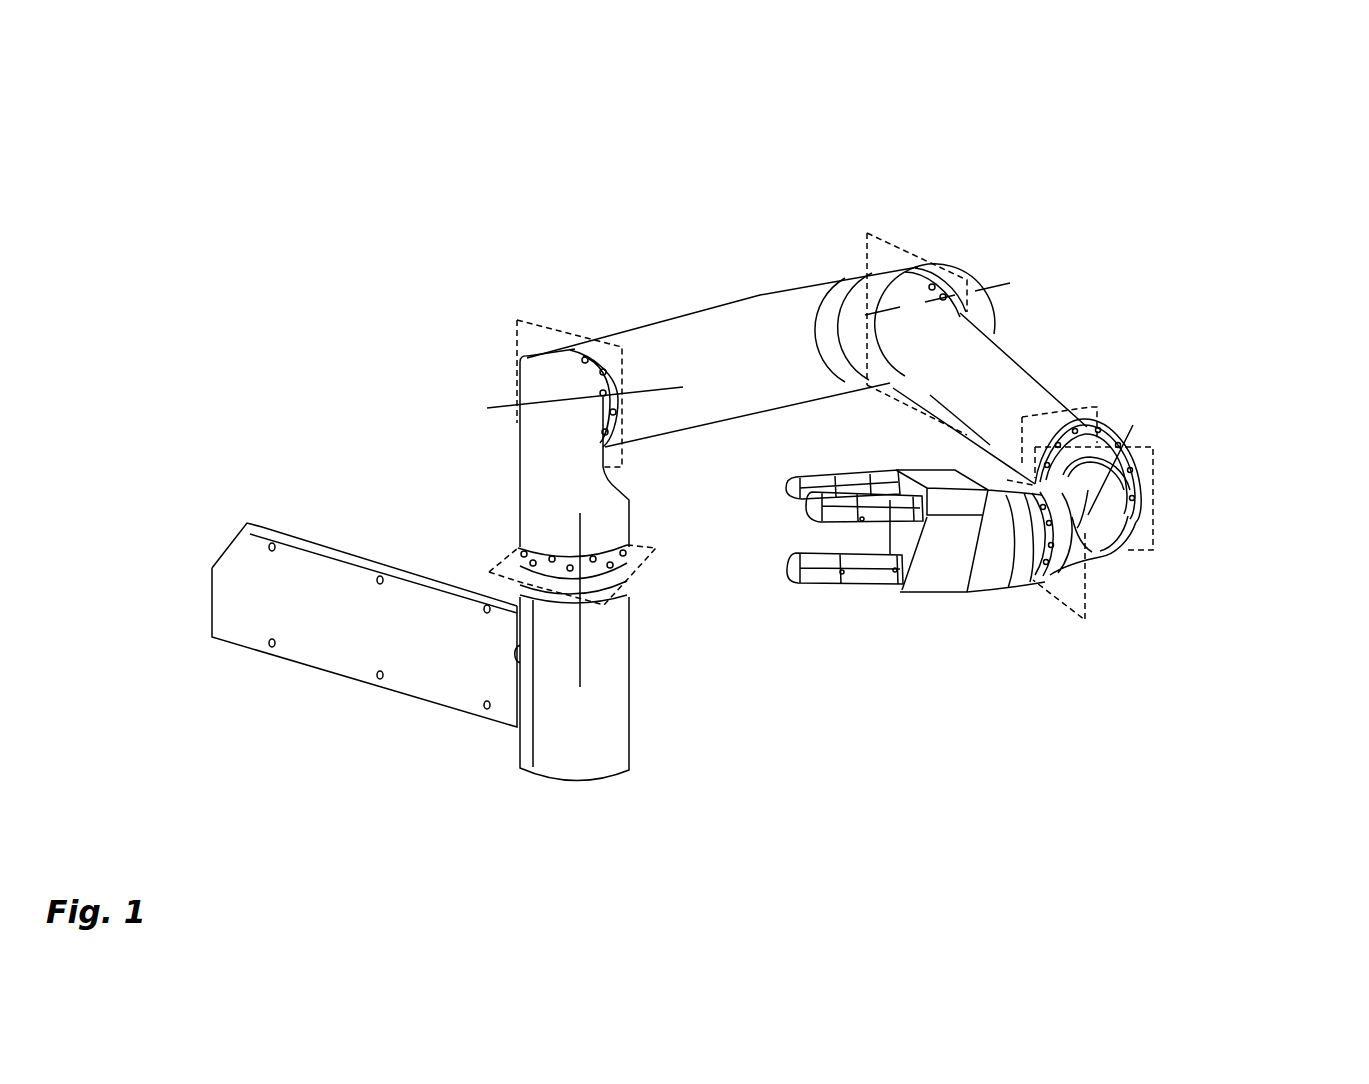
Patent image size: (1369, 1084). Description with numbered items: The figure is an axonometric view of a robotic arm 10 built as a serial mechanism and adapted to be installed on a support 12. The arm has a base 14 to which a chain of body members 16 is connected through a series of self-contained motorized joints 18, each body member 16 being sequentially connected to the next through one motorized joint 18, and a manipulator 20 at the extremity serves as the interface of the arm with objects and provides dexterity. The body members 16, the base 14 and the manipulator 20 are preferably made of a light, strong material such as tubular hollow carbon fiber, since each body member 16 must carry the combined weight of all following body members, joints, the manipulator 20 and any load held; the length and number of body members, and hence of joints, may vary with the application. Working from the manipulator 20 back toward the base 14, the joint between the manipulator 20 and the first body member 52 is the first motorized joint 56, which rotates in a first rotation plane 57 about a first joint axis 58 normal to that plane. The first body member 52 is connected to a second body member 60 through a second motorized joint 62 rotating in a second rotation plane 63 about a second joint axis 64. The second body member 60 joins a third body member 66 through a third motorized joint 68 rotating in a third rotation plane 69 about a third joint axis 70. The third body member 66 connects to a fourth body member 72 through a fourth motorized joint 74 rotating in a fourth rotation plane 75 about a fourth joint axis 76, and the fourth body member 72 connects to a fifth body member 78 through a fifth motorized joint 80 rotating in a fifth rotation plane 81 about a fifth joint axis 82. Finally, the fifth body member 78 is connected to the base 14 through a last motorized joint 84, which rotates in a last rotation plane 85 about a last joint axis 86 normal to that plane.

The robotic arm 10 is at (838, 143).
The support 12 is at (247, 617).
The base 14 is at (584, 759).
The body members 16 is at (650, 338).
The self-contained motorized joints 18 is at (852, 435).
The manipulator 20 is at (937, 562).
The first body member 52 is at (1100, 557).
The first motorized joint 56 is at (1033, 577).
The first rotation plane 57 is at (1085, 622).
The first joint axis 58 is at (1028, 532).
The second body member 60 is at (1105, 445).
The second motorized joint 62 is at (1153, 510).
The second rotation plane 63 is at (1155, 510).
The second joint axis 64 is at (1108, 448).
The third body member 66 is at (1017, 372).
The third motorized joint 68 is at (1107, 447).
The third rotation plane 69 is at (1123, 402).
The third joint axis 70 is at (1010, 407).
The fourth body member 72 is at (735, 322).
The fourth motorized joint 74 is at (945, 272).
The fourth rotation plane 75 is at (867, 233).
The fourth joint axis 76 is at (989, 286).
The fifth body member 78 is at (547, 478).
The fifth motorized joint 80 is at (587, 357).
The fifth rotation plane 81 is at (513, 337).
The fifth joint axis 82 is at (680, 362).
The last motorized joint 84 is at (625, 565).
The last rotation plane 85 is at (647, 555).
The last joint axis 86 is at (576, 657).